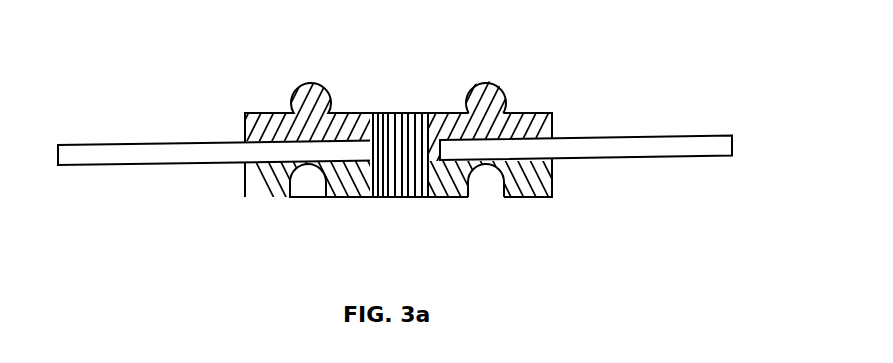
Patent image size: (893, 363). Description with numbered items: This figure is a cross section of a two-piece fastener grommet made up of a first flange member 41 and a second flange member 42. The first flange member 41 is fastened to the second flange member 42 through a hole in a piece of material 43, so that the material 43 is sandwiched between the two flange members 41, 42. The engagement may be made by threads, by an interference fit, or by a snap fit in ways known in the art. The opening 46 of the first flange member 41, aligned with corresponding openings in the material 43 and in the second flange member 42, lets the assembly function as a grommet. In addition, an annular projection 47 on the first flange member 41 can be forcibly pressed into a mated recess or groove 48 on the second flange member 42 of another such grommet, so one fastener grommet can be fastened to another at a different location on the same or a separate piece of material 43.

The first flange member 41 is at (615, 130).
The second flange member 42 is at (623, 198).
The piece of material 43 is at (695, 148).
The opening 46 is at (390, 203).
The annular projection 47 is at (487, 92).
The recess or groove 48 is at (483, 177).